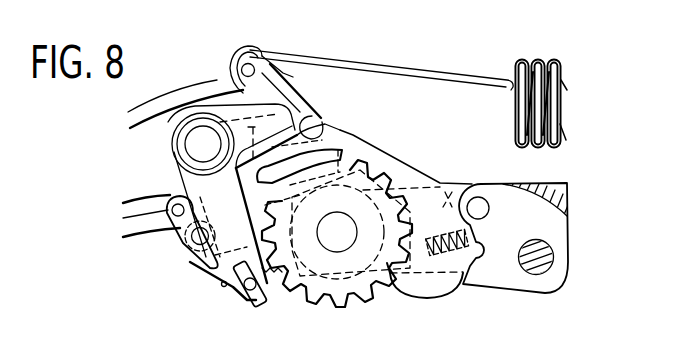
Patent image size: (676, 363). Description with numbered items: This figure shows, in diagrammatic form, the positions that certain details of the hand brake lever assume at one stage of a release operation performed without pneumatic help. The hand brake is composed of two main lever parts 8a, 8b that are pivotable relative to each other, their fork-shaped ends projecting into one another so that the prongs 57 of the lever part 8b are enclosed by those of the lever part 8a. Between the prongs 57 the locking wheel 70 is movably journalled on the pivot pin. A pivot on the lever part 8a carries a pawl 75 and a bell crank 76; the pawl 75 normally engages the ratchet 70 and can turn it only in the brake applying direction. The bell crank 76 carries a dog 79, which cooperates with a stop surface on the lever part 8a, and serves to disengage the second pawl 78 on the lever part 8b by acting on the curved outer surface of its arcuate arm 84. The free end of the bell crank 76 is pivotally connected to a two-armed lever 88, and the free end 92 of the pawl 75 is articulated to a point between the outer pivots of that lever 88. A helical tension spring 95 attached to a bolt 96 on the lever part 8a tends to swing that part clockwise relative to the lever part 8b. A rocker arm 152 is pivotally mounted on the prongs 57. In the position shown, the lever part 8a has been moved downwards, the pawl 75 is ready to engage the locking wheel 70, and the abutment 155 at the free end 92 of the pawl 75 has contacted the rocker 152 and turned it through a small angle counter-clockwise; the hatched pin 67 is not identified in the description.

The lever part 8a is at (173, 95).
The lever part 8b is at (532, 182).
The prongs 57 is at (497, 285).
The pivot pin 67 is at (536, 246).
The locking wheel 70 is at (328, 303).
The pawl 75 is at (341, 134).
The bell crank 76 is at (298, 106).
The pawl 78 is at (430, 292).
The dog 79 is at (286, 68).
The arcuate arm 84 is at (378, 146).
The two-armed lever 88 is at (210, 278).
The free end 92 is at (196, 268).
The helical tension spring 95 is at (515, 63).
The bolt 96 is at (238, 72).
The rocker arm 152 is at (278, 296).
The abutment 155 is at (222, 288).